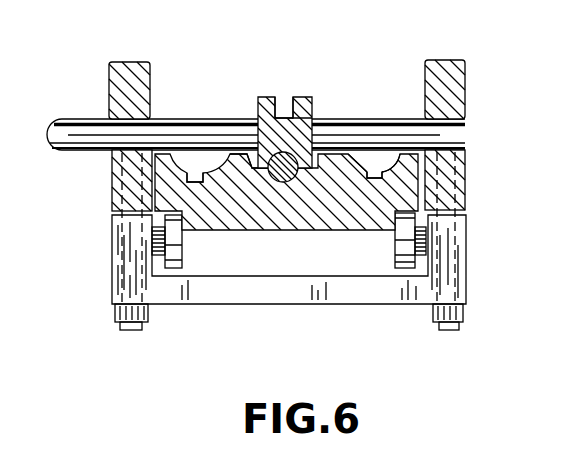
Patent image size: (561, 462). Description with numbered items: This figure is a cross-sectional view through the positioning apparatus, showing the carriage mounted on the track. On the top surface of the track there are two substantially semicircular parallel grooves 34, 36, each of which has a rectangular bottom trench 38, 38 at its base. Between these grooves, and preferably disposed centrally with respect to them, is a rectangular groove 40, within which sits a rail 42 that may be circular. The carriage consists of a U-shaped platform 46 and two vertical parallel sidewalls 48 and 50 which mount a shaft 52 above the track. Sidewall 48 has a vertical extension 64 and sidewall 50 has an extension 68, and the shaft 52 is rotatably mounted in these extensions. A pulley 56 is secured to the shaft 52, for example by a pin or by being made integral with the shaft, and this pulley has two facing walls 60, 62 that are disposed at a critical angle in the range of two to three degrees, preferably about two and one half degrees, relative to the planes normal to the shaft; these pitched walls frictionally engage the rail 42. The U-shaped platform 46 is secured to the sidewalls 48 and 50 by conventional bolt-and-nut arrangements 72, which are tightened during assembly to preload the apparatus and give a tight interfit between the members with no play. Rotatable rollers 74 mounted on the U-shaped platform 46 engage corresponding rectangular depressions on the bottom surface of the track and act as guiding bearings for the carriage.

The semicircular groove 34 is at (173, 162).
The semicircular groove 36 is at (360, 167).
The rectangular bottom trench 38 is at (197, 167).
The rectangular groove 40 is at (236, 167).
The rail 42 is at (283, 182).
The U-shaped platform 46 is at (392, 297).
The sidewall 48 is at (468, 172).
The sidewall 50 is at (112, 200).
The shaft 52 is at (65, 120).
The pulley 56 is at (307, 118).
The facing wall 60 is at (276, 112).
The facing wall 62 is at (293, 102).
The vertical extension 64 is at (443, 65).
The extension 68 is at (128, 75).
The bolt-and-nut arrangement 72 is at (128, 333).
The rotatable roller 74 is at (182, 262).